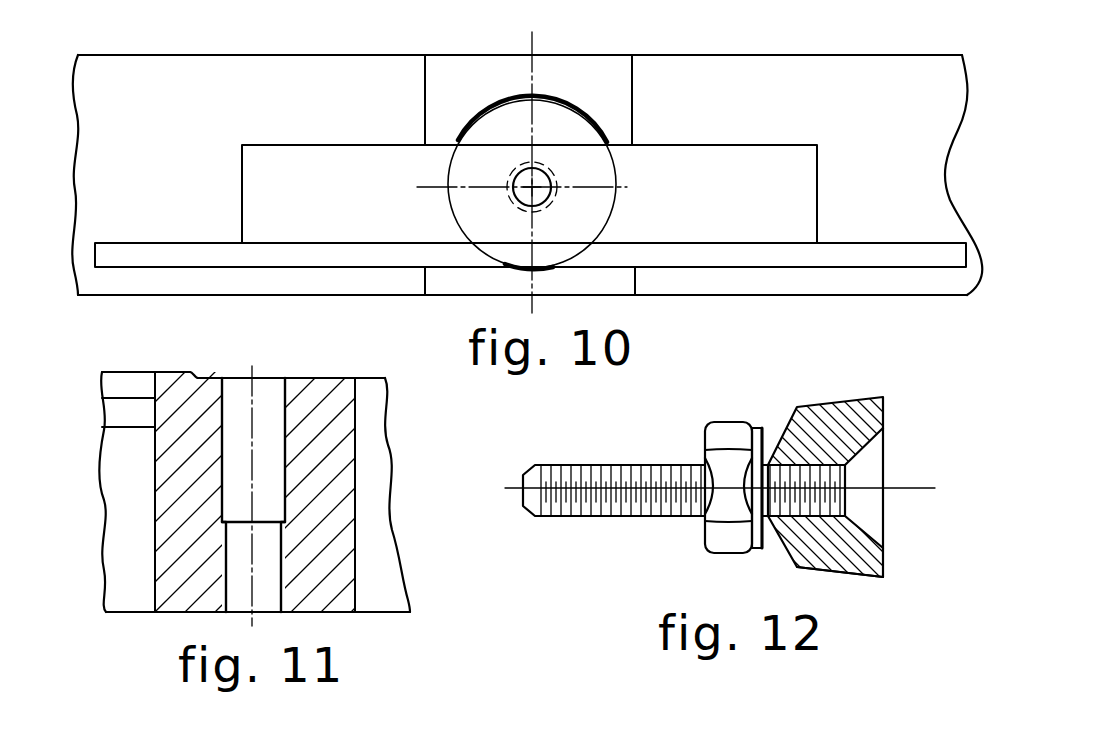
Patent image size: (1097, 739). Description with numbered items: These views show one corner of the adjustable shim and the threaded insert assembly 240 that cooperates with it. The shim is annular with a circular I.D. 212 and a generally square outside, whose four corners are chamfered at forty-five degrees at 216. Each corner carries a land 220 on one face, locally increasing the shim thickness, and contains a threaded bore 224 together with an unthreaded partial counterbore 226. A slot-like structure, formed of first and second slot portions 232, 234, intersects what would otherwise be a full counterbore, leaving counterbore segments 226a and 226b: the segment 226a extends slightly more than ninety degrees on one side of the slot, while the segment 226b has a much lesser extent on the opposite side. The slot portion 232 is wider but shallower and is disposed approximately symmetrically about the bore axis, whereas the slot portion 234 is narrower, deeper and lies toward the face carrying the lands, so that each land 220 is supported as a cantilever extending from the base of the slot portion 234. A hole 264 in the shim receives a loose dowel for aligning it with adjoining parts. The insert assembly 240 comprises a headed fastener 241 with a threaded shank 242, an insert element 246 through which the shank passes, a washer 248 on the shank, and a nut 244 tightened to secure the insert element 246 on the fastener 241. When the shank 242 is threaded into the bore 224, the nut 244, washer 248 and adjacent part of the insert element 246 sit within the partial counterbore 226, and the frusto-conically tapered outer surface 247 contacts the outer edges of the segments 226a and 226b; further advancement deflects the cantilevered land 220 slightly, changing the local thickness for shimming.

In FIG. 11, the circular I.D. 212 is at (355, 416).
In FIG. 10, the chamfered corners 216 is at (460, 83).
In FIG. 11, the lands 220 is at (172, 372).
In FIG. 10, the threaded bore 224 is at (543, 167).
In FIG. 10, the partial counterbore 226 is at (608, 221).
In FIG. 10, the counterbore segment 226a is at (547, 103).
In FIG. 10, the counterbore segment 226b is at (540, 268).
In FIG. 10, the first slot portion 232 is at (800, 195).
In FIG. 10, the second slot portion 234 is at (748, 253).
In FIG. 11, the second slot portion 234 is at (124, 412).
In FIG. 12, the threaded insert assembly 240 is at (684, 491).
In FIG. 12, the headed fastener 241 is at (678, 480).
In FIG. 12, the threaded shank 242 is at (580, 487).
In FIG. 12, the nut 244 is at (731, 423).
In FIG. 12, the insert element 246 is at (843, 410).
In FIG. 12, the frusto-conically tapered outer surface 247 is at (835, 570).
In FIG. 12, the washer 248 is at (752, 553).
In FIG. 11, the hole 264 is at (285, 486).